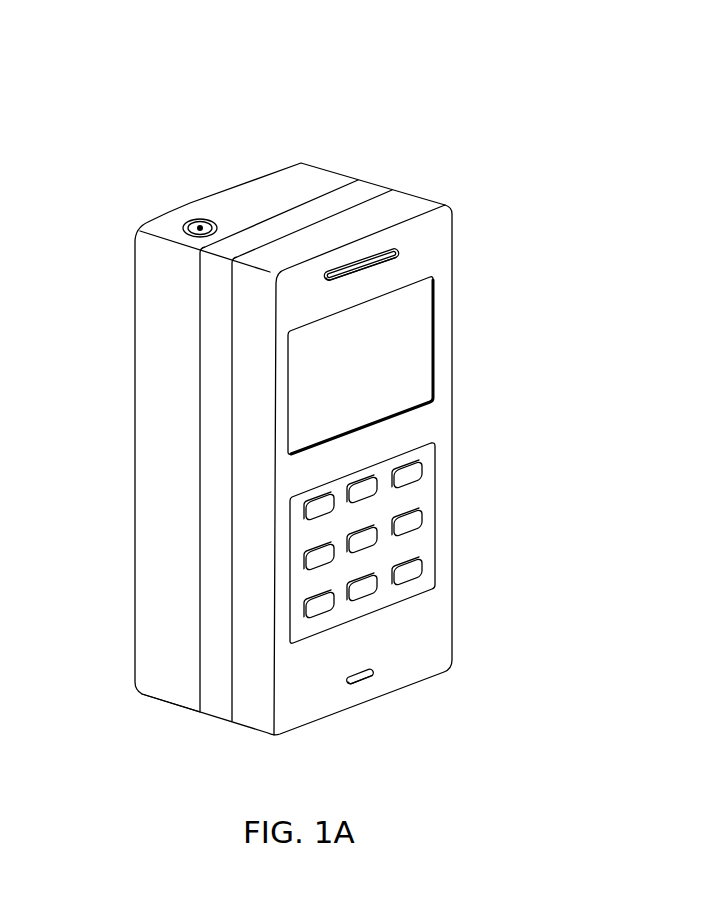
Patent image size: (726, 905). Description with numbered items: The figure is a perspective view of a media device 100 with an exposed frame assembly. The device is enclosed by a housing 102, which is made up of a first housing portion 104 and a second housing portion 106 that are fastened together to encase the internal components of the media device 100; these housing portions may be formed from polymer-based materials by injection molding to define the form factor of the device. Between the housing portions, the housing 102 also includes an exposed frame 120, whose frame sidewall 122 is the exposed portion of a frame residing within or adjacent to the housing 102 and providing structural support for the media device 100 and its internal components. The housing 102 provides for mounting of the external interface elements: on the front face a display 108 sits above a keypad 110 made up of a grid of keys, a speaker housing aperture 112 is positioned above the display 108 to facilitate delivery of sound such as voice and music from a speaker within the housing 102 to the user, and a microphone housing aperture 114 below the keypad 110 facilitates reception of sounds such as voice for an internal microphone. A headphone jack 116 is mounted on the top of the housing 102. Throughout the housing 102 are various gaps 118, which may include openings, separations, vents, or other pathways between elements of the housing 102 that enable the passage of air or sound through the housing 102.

The media device 100 is at (588, 105).
The housing 102 is at (135, 568).
The first housing portion 104 is at (173, 708).
The second housing portion 106 is at (252, 730).
The display 108 is at (425, 329).
The keypad 110 is at (430, 487).
The speaker housing aperture 112 is at (398, 250).
The microphone housing aperture 114 is at (372, 673).
The headphone jack 116 is at (199, 219).
The gaps 118 is at (307, 205).
The exposed frame 120 is at (198, 630).
The frame sidewall 122 is at (382, 185).